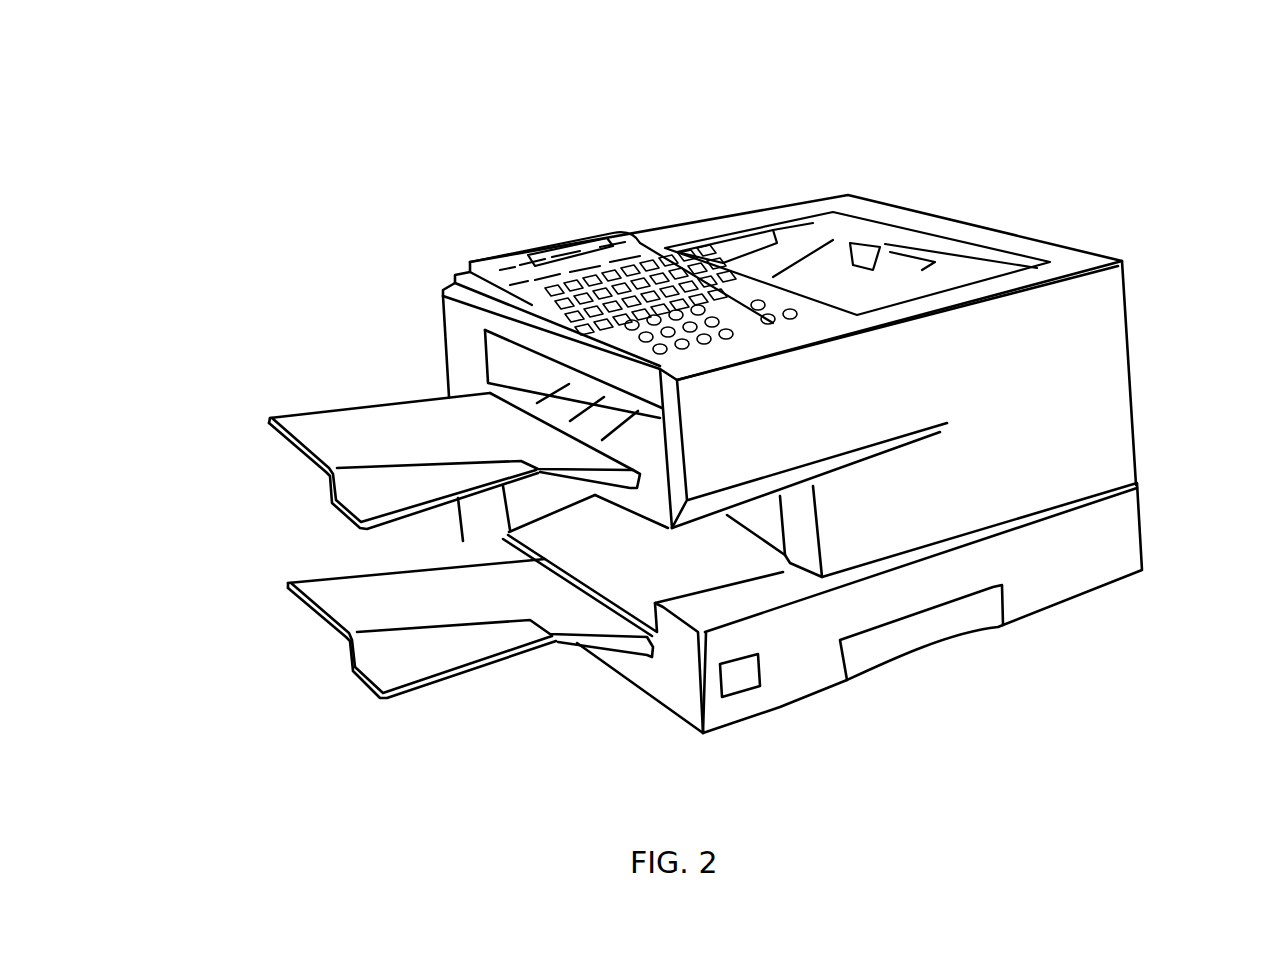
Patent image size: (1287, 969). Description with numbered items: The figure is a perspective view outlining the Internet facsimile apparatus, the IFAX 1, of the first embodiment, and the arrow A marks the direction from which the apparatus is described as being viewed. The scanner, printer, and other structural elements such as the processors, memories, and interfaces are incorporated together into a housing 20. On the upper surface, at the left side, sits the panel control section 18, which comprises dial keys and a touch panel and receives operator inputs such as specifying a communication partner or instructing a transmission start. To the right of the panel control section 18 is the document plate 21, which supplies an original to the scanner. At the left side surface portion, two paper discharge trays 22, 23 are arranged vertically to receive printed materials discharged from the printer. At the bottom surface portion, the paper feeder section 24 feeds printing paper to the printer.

The IFAX 1 is at (452, 82).
The panel control section 18 is at (620, 250).
The housing 20 is at (1083, 384).
The document plate 21 is at (900, 268).
The paper discharge tray 22 is at (347, 432).
The paper discharge tray 23 is at (318, 613).
The paper feeder section 24 is at (1105, 522).
The arrow A is at (937, 667).